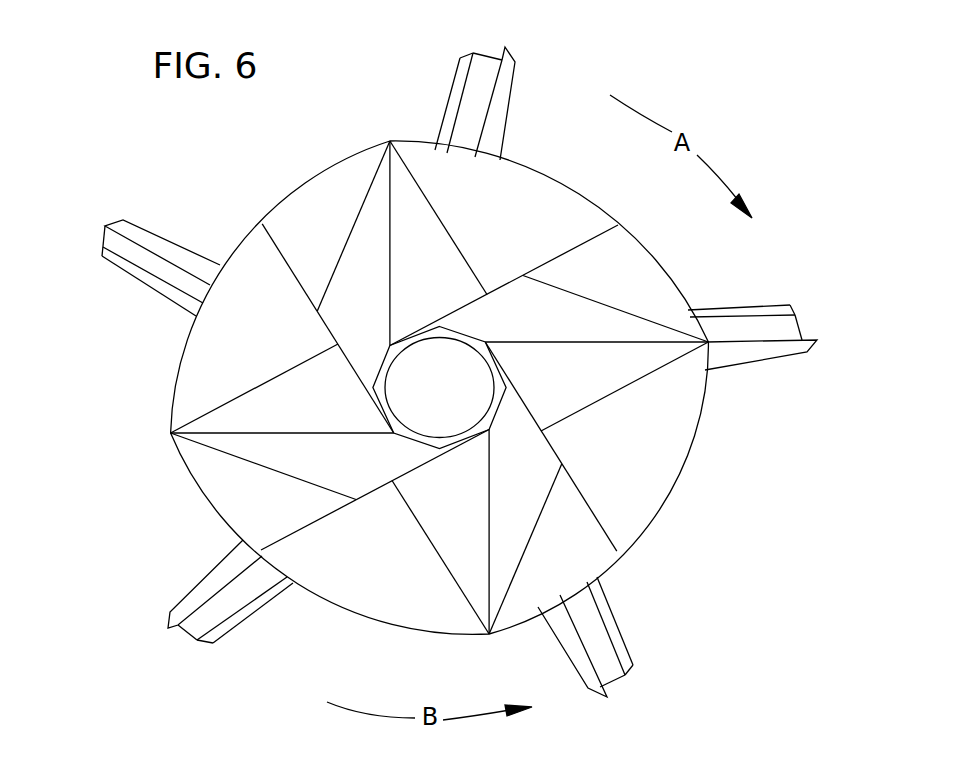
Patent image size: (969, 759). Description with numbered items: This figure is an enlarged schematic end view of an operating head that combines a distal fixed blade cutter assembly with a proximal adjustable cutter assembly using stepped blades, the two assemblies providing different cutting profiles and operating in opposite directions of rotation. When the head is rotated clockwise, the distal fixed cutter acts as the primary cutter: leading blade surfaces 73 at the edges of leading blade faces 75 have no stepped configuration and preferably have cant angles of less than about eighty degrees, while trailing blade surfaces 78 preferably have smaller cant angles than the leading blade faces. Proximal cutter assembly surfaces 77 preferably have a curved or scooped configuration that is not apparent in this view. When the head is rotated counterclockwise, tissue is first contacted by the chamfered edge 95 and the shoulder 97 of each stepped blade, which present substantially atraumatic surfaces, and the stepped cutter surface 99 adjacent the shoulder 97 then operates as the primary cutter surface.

The leading blade surface 73 is at (390, 290).
The leading blade face 75 is at (401, 237).
The proximal cutter assembly surface 77 is at (473, 237).
The trailing blade surface 78 is at (388, 238).
The chamfered edge 95 is at (450, 100).
The shoulder 97 is at (480, 82).
The cutter surface 99 is at (500, 60).